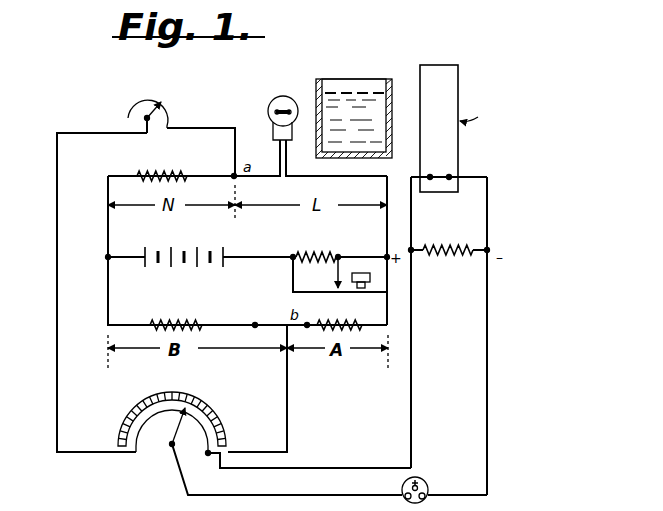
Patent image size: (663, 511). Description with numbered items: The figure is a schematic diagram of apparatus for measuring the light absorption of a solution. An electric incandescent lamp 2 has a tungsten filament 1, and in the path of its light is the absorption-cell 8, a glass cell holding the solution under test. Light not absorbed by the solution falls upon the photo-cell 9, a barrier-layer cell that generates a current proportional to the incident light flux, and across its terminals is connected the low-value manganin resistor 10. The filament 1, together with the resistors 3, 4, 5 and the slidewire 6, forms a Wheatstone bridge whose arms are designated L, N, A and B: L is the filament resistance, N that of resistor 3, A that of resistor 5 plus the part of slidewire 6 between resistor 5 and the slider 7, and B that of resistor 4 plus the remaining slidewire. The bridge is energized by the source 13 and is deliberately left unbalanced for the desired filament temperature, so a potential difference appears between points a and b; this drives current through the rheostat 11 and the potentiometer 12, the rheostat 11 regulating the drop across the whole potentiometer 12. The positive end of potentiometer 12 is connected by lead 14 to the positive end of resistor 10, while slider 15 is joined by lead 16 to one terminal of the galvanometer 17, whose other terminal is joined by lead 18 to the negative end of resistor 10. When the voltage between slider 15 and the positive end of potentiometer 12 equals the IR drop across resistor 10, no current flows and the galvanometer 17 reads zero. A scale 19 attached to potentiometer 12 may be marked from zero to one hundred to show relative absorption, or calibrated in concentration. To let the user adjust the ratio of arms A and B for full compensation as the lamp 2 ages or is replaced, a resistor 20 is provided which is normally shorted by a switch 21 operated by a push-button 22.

The filament 1 is at (272, 116).
The electric incandescent lamp 2 is at (283, 96).
The resistor 3 is at (162, 171).
The resistor 4 is at (184, 318).
The resistor 5 is at (326, 322).
The slidewire 6 is at (256, 323).
The slider 7 is at (285, 330).
The absorption-cell 8 is at (352, 85).
The photo-cell 9 is at (440, 72).
The resistor 10 is at (462, 248).
The rheostat 11 is at (163, 102).
The potentiometer 12 is at (152, 416).
The source 13 is at (210, 250).
The lead 14 is at (411, 392).
The slider 15 is at (184, 412).
The lead 16 is at (303, 496).
The galvanometer 17 is at (428, 484).
The lead 18 is at (487, 384).
The scale 19 is at (188, 423).
The resistor 20 is at (330, 252).
The switch 21 is at (355, 296).
The push-button 22 is at (370, 262).